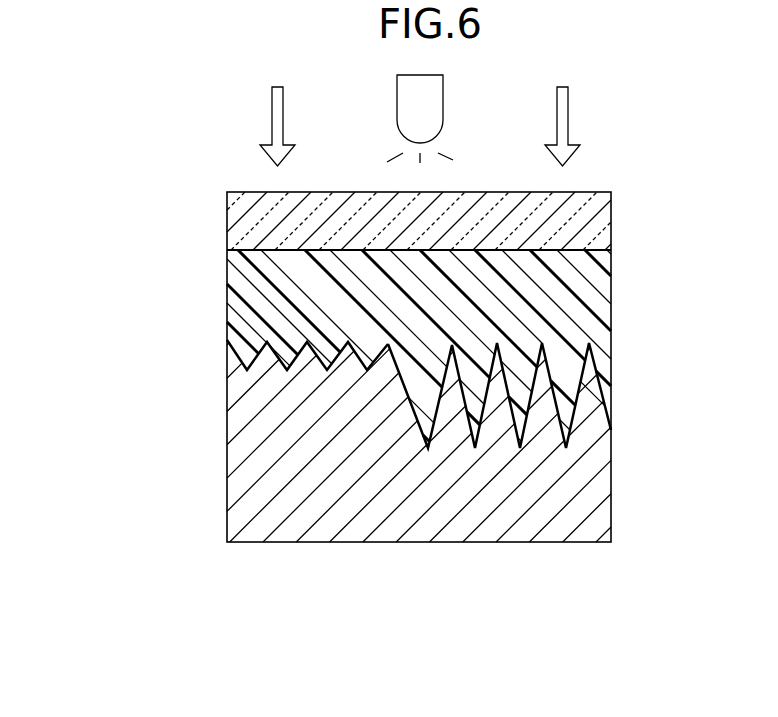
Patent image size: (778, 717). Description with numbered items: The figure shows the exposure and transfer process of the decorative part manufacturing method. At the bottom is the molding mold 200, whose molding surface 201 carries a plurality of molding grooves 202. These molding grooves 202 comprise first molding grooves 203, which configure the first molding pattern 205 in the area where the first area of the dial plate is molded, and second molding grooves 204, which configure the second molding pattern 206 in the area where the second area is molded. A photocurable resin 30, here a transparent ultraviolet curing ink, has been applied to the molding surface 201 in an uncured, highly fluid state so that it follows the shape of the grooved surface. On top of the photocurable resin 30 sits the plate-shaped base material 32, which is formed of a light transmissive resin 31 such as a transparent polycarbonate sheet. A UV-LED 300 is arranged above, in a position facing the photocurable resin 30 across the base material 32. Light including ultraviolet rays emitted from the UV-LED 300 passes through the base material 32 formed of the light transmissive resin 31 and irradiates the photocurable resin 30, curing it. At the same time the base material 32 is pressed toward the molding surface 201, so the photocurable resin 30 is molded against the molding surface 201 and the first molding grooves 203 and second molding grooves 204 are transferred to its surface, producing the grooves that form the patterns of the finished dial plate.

The molding mold 200 is at (136, 438).
The molding surface 201 is at (289, 275).
The molding grooves 202 is at (419, 515).
The first molding grooves 203 is at (291, 357).
The second molding grooves 204 is at (512, 388).
The first molding pattern 205 is at (306, 331).
The second molding pattern 206 is at (532, 315).
The photocurable resin 30 is at (438, 287).
The light transmissive resin 31 is at (454, 221).
The base material 32 is at (609, 205).
The UV-LED 300 is at (443, 90).